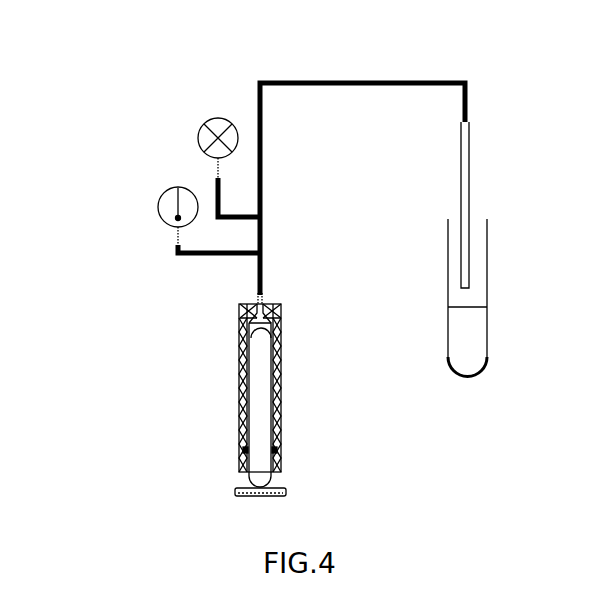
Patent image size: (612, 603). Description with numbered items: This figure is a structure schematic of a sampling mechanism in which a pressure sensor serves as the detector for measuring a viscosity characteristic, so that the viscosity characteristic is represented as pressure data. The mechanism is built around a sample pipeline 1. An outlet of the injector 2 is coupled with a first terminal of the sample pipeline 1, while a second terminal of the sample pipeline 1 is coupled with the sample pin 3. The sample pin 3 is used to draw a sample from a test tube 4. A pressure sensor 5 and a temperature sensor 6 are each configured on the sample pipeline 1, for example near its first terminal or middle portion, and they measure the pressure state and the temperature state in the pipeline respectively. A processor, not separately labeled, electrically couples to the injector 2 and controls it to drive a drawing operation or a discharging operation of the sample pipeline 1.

The sample pipeline 1 is at (258, 95).
The injector 2 is at (262, 388).
The sample pin 3 is at (469, 178).
The test tube 4 is at (477, 348).
The pressure sensor 5 is at (194, 158).
The temperature sensor 6 is at (155, 205).